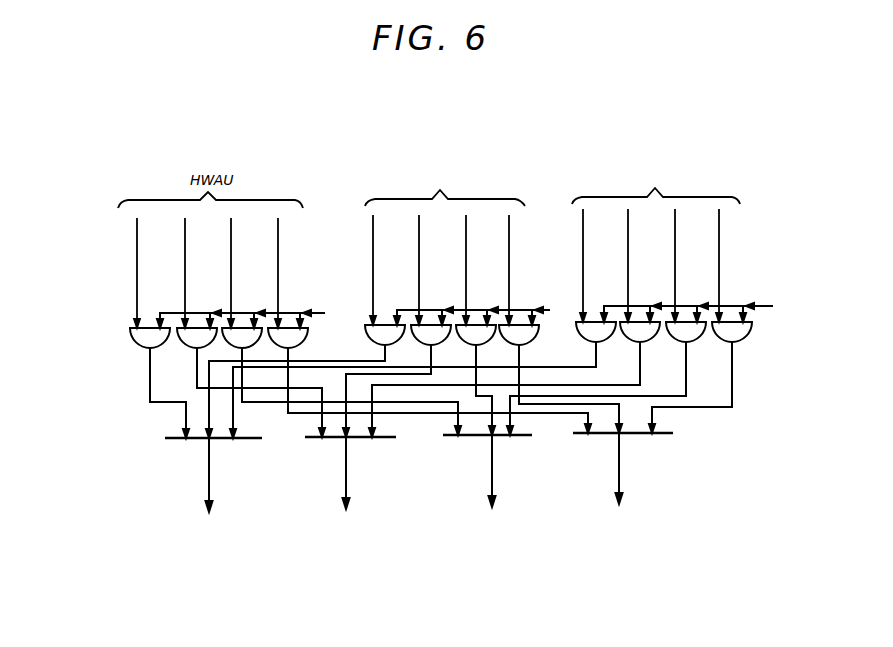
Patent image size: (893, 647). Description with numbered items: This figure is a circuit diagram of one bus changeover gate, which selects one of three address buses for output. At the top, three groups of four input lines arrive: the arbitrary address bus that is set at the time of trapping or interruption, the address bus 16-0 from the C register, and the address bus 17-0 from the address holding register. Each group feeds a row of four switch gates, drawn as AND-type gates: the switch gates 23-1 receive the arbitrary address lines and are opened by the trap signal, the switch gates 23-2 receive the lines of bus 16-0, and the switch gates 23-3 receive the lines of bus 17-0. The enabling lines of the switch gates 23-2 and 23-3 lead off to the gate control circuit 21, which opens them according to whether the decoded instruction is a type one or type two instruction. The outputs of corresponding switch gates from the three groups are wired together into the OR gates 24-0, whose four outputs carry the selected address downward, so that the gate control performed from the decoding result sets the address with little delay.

The address bus 16-0 is at (445, 247).
The address bus 17-0 is at (656, 243).
The gate control circuit 21 is at (806, 298).
The switch gate 23-1 is at (210, 320).
The switch gate 23-2 is at (436, 326).
The switch gate 23-3 is at (685, 322).
The OR gate 24-0 is at (382, 427).